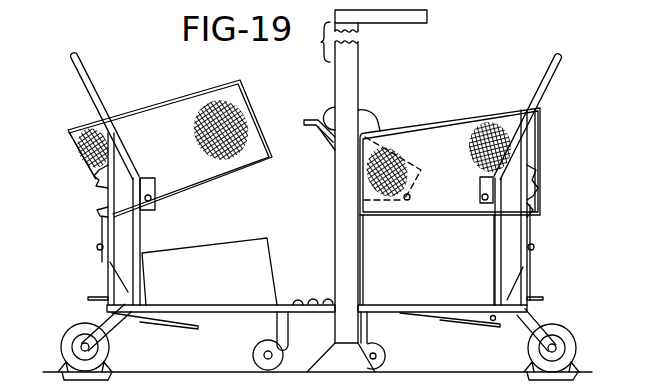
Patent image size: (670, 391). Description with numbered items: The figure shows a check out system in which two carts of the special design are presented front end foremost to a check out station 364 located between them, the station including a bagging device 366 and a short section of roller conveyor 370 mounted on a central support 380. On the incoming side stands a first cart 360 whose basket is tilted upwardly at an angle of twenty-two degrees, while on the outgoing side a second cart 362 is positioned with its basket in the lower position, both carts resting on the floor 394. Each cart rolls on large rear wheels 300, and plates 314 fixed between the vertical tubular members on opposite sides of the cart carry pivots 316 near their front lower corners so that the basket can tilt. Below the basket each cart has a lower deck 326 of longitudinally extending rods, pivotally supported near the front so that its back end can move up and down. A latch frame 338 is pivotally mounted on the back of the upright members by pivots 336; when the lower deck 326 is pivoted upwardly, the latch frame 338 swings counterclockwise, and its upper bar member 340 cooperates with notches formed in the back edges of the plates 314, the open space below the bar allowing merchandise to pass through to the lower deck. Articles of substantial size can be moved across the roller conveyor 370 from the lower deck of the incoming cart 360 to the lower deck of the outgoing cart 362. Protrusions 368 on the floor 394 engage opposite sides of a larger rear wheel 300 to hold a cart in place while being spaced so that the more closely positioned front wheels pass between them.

The large rear wheels 300 is at (70, 326).
The plates 314 is at (98, 196).
The pivots 316 is at (163, 197).
The lower deck 326 is at (165, 320).
The pivots 336 is at (97, 247).
The latch frame 338 is at (99, 260).
The upper bar member 340 is at (100, 211).
The first cart 360 is at (148, 89).
The second cart 362 is at (501, 77).
The check out station 364 is at (309, 105).
The bagging device 366 is at (330, 152).
The protrusions 368 is at (108, 374).
The roller conveyor 370 is at (314, 284).
The base post 380 is at (348, 390).
The floor surface 394 is at (317, 381).